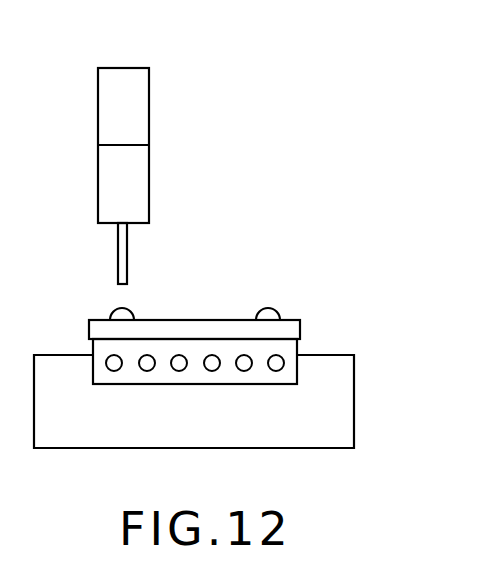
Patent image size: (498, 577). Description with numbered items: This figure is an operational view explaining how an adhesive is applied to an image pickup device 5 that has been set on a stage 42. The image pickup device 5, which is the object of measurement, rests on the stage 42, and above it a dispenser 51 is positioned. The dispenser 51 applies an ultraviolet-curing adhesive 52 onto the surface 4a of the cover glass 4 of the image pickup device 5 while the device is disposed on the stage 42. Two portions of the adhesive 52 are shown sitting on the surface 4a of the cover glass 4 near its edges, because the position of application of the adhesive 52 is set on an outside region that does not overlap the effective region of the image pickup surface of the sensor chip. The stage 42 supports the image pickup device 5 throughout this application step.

The dispenser 51 is at (102, 63).
The ultraviolet-curing adhesive 52 is at (114, 311).
The surface of the cover glass 4a is at (201, 319).
The cover glass 4 is at (300, 330).
The image pickup device 5 is at (333, 303).
The stage 42 is at (342, 404).